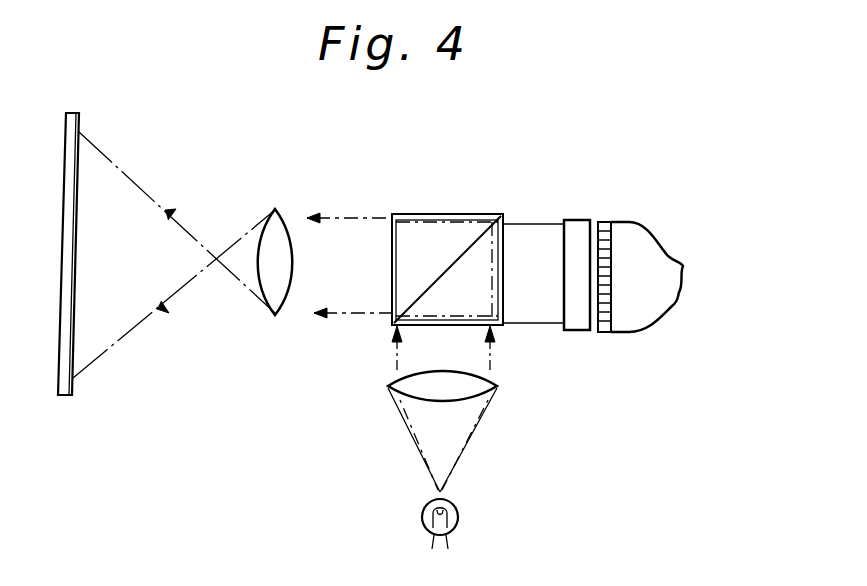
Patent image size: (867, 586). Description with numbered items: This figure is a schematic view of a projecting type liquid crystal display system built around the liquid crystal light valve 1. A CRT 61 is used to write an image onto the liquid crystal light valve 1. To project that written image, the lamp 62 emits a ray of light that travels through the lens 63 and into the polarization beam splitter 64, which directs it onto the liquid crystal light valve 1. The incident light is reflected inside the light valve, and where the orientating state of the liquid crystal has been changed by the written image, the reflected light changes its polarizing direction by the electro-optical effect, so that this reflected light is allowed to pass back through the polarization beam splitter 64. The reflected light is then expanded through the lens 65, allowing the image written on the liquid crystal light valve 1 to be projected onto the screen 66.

The liquid crystal light valve 1 is at (579, 230).
The CRT 61 is at (628, 222).
The lamp 62 is at (459, 516).
The lens 63 is at (470, 389).
The polarization beam splitter 64 is at (443, 214).
The lens 65 is at (275, 209).
The screen 66 is at (76, 114).